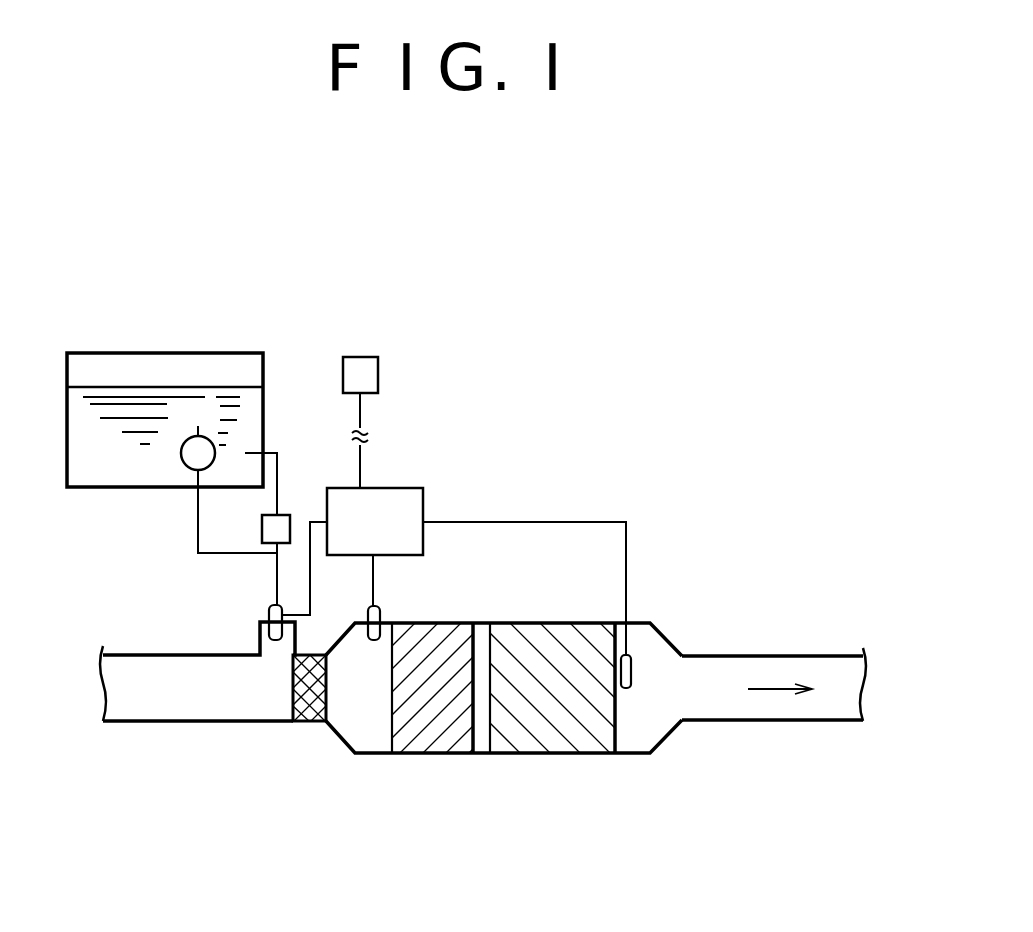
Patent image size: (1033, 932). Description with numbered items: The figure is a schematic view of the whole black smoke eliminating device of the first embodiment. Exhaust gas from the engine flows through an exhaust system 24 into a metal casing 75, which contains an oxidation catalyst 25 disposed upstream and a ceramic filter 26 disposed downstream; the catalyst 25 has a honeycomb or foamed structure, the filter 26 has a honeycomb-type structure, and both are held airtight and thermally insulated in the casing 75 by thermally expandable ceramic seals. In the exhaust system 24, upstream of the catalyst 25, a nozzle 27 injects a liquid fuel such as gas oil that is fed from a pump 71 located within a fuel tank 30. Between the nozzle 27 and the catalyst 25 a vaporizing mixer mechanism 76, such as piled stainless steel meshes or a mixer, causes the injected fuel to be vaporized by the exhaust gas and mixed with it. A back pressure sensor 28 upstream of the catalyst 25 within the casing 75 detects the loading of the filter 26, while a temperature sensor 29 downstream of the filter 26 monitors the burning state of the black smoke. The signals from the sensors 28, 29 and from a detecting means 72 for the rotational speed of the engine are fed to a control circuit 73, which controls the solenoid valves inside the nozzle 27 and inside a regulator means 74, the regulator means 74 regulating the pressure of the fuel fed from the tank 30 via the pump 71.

The exhaust system 24 is at (136, 672).
The oxidation catalyst 25 is at (446, 755).
The ceramic filter 26 is at (570, 755).
The nozzle 27 is at (268, 612).
The back pressure sensor 28 is at (380, 612).
The temperature sensor 29 is at (632, 656).
The fuel tank 30 is at (157, 472).
The pump 71 is at (200, 436).
The detecting means 72 is at (378, 380).
The control circuit 73 is at (423, 494).
The regulator means 74 is at (287, 513).
The metal casing 75 is at (352, 755).
The vaporizing mixer mechanism 76 is at (310, 722).